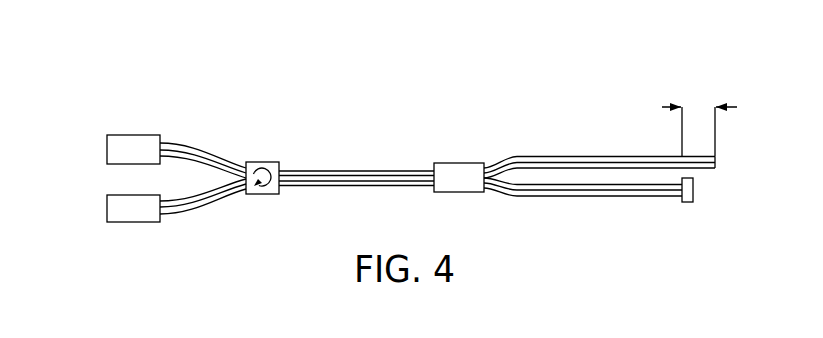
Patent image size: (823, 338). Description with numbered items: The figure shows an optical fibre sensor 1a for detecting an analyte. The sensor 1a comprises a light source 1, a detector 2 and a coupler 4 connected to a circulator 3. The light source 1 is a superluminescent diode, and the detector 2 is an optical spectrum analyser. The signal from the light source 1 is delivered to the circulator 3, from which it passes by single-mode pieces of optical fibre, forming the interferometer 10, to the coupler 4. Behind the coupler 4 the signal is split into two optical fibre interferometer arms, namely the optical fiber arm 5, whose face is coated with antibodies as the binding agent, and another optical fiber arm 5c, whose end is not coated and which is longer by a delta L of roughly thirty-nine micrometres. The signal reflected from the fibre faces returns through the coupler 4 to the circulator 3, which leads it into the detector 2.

The sensor 1a is at (106, 77).
The light source 1 is at (136, 135).
The detector 2 is at (135, 222).
The circulator 3 is at (262, 162).
The interferometer 10 is at (345, 171).
The coupler 4 is at (457, 163).
The optical fiber arm 5c is at (572, 156).
The interferometer arm coated with a binding agent 5 is at (694, 190).